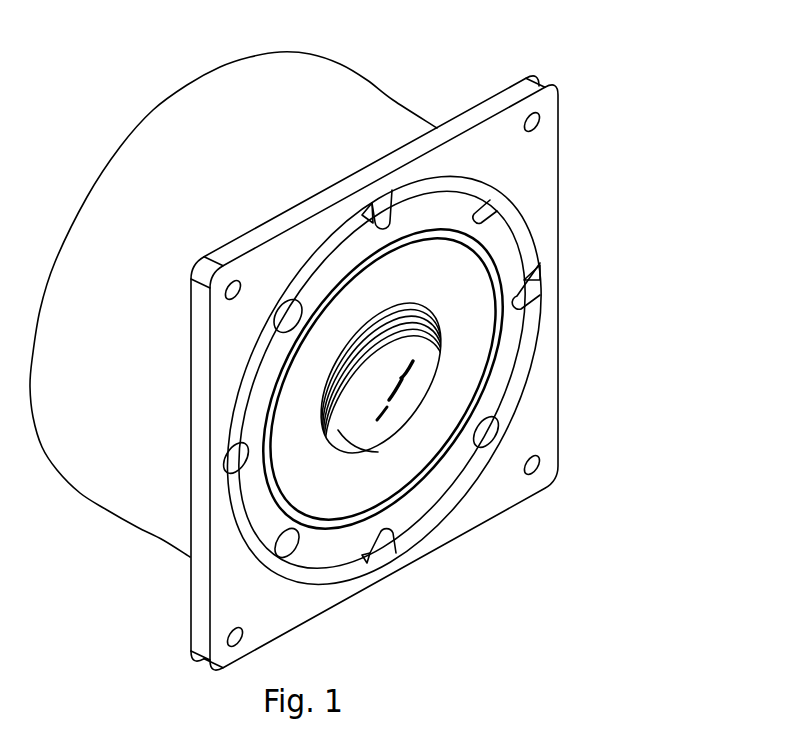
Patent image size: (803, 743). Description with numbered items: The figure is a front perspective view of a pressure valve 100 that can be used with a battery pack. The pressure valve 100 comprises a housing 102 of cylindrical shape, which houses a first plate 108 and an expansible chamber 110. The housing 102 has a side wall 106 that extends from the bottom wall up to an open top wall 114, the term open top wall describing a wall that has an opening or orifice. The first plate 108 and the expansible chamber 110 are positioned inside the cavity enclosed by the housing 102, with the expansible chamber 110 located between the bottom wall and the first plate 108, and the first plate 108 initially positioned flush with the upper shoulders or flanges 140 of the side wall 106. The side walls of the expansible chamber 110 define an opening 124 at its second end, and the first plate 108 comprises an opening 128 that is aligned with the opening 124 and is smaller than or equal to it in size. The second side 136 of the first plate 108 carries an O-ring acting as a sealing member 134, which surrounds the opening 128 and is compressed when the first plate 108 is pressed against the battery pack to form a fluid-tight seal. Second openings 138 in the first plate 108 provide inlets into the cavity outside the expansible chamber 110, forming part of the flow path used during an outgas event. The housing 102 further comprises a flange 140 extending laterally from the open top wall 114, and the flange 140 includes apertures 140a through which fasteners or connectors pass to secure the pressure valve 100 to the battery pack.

The pressure valve 100 is at (452, 58).
The housing 102 is at (340, 53).
The side wall 106 is at (160, 539).
The first plate 108 is at (427, 490).
The expansible chamber 110 is at (406, 356).
The open top wall 114 is at (338, 577).
The opening 124 is at (400, 389).
The opening 128 is at (368, 438).
The sealing member 134 is at (440, 447).
The second side 136 is at (475, 302).
The second openings 138 is at (283, 300).
The flange 140 is at (543, 100).
The apertures 140a is at (543, 117).